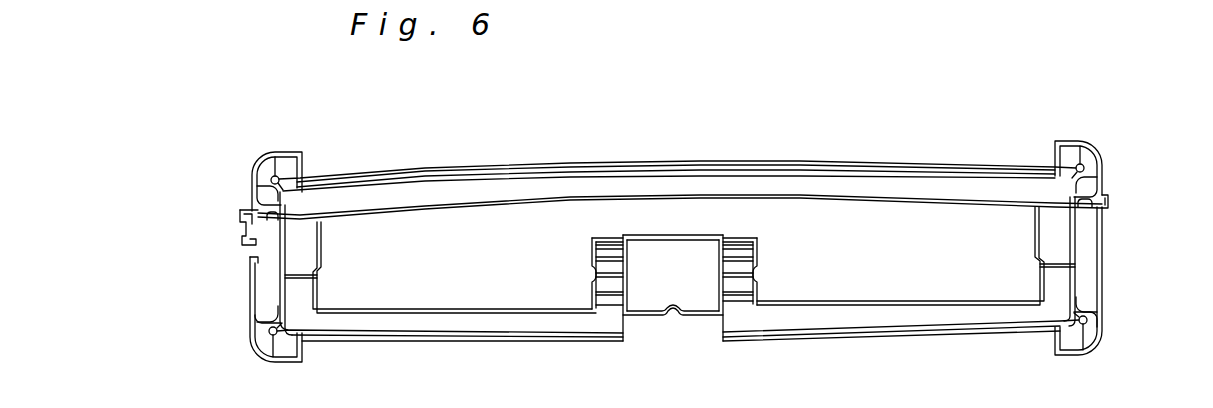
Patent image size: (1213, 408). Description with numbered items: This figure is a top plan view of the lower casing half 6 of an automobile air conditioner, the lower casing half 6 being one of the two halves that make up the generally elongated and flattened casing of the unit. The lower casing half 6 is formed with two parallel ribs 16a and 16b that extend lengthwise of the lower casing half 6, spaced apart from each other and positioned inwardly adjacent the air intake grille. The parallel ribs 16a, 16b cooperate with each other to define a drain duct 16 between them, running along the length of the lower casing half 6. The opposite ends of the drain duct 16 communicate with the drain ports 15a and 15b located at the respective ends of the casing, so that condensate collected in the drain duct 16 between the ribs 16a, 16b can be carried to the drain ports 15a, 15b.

The lower casing half 6 is at (845, 288).
The drain port 15a is at (240, 212).
The drain port 15b is at (1108, 203).
The drain duct 16 is at (903, 188).
The parallel rib 16a is at (553, 197).
The parallel rib 16b is at (427, 178).